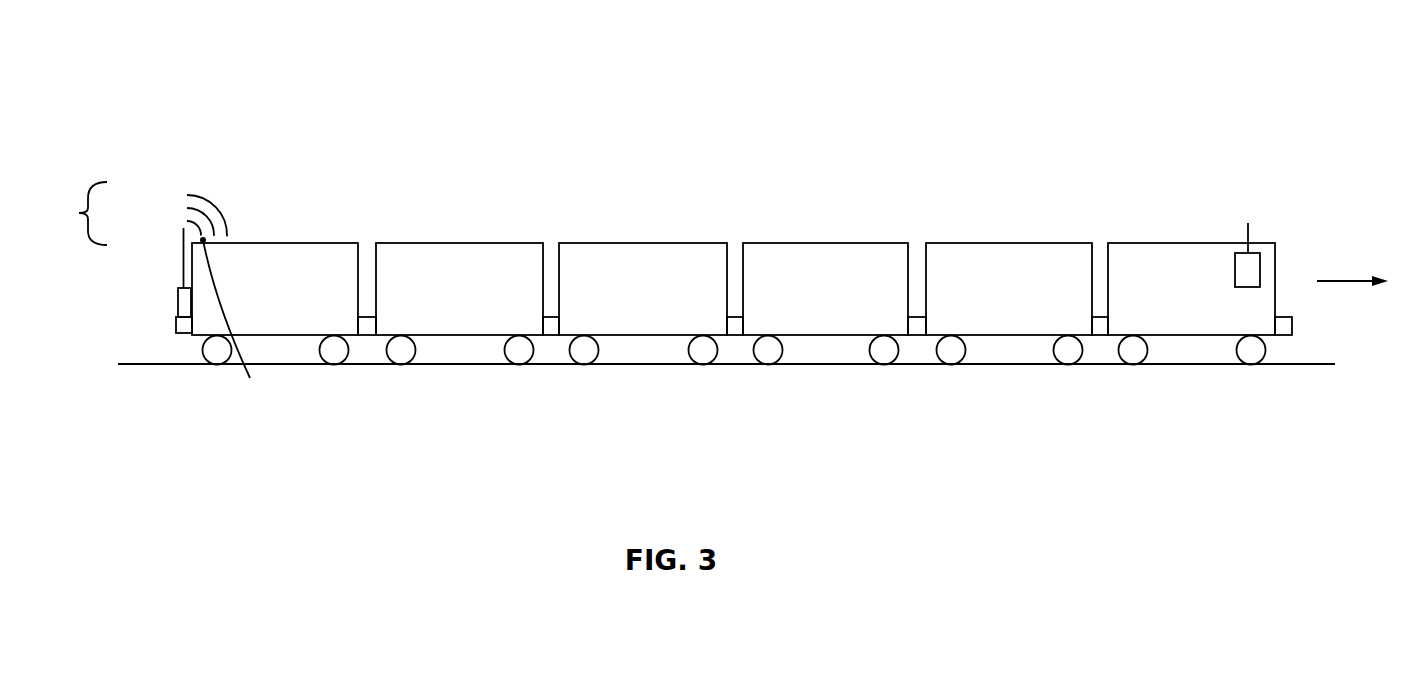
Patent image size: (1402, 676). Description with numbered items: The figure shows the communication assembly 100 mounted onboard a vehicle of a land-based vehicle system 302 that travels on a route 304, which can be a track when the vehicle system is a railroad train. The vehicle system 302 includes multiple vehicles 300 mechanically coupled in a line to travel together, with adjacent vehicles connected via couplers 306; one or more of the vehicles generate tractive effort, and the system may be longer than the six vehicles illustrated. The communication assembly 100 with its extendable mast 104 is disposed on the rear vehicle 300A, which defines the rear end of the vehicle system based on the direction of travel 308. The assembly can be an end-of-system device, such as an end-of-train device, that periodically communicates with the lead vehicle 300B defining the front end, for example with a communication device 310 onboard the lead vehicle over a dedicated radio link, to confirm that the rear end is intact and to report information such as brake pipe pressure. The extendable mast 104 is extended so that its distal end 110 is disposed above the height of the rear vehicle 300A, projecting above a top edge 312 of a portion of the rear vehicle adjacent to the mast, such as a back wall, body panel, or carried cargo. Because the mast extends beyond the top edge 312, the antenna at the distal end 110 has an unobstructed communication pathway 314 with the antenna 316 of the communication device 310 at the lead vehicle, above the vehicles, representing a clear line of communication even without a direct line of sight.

The communication assembly 100 is at (178, 302).
The extendable mast 104 is at (182, 258).
The distal end of the mast 110 is at (176, 220).
The vehicles 300 is at (457, 243).
The rear vehicle 300A is at (273, 243).
The lead vehicle 300B is at (1193, 243).
The vehicle system 302 is at (445, 108).
The route 304 is at (817, 366).
The couplers 306 is at (367, 322).
The direction of travel 308 is at (1342, 280).
The communication device 310 is at (1260, 275).
The top edge 312 is at (239, 324).
The communication pathway 314 is at (78, 213).
The antenna of the communication device 316 is at (1246, 224).